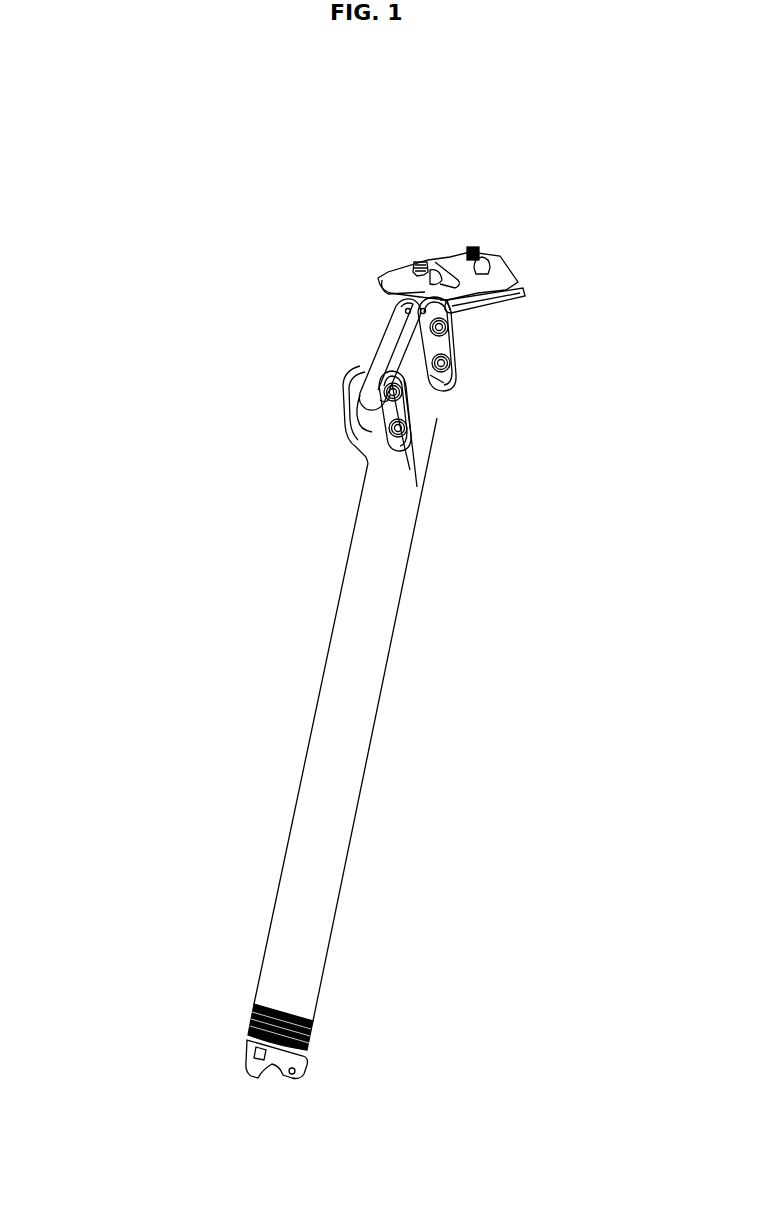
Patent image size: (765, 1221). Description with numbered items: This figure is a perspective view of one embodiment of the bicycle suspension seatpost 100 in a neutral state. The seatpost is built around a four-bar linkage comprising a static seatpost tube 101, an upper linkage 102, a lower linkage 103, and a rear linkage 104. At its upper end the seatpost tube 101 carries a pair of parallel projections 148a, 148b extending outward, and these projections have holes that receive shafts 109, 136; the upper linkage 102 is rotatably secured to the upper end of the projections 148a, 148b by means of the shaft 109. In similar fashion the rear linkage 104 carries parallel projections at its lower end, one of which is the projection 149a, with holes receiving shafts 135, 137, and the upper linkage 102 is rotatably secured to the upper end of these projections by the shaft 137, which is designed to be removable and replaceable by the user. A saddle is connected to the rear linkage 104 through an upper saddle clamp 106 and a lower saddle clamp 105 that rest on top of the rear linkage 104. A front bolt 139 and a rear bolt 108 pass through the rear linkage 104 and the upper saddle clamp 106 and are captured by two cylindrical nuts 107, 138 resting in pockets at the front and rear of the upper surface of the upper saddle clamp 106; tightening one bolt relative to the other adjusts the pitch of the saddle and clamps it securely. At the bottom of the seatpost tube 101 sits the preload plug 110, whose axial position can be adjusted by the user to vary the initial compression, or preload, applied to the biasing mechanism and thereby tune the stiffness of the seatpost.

The bicycle suspension seatpost 100 is at (118, 189).
The static seatpost tube 101 is at (337, 796).
The upper linkage 102 is at (383, 344).
The lower linkage 103 is at (420, 388).
The rear linkage 104 is at (460, 328).
The lower saddle clamp 105 is at (508, 295).
The upper saddle clamp 106 is at (378, 277).
The cylindrical nut 107 is at (487, 268).
The rear bolt 108 is at (475, 247).
The shaft 109 is at (400, 395).
The preload plug 110 is at (305, 1030).
The shaft 135 is at (448, 367).
The shaft 136 is at (403, 432).
The shaft 137 is at (443, 330).
The cylindrical nut 138 is at (407, 267).
The front bolt 139 is at (418, 262).
The parallel projection 148a is at (348, 397).
The parallel projection 148b is at (375, 407).
The parallel projection 149a is at (438, 380).